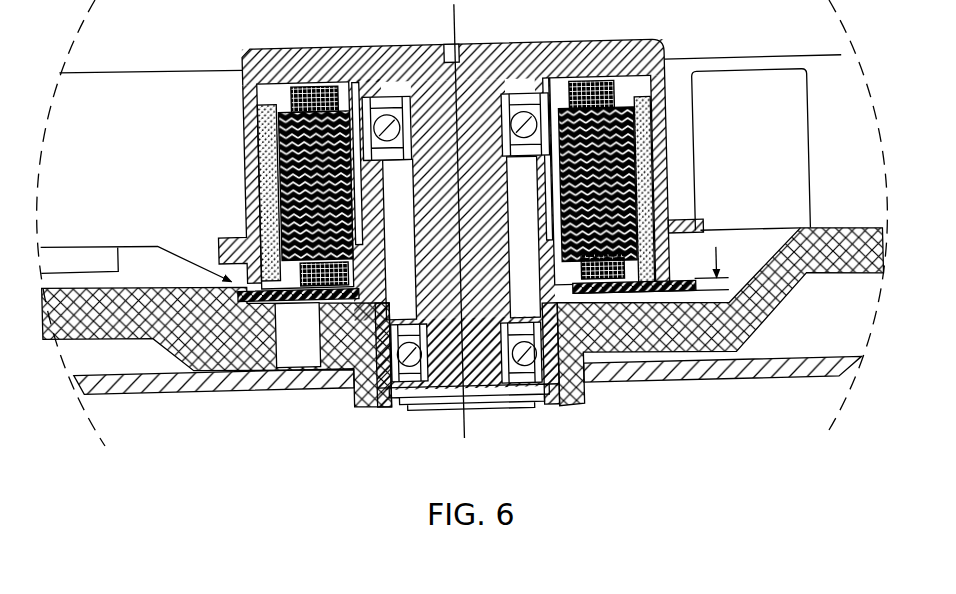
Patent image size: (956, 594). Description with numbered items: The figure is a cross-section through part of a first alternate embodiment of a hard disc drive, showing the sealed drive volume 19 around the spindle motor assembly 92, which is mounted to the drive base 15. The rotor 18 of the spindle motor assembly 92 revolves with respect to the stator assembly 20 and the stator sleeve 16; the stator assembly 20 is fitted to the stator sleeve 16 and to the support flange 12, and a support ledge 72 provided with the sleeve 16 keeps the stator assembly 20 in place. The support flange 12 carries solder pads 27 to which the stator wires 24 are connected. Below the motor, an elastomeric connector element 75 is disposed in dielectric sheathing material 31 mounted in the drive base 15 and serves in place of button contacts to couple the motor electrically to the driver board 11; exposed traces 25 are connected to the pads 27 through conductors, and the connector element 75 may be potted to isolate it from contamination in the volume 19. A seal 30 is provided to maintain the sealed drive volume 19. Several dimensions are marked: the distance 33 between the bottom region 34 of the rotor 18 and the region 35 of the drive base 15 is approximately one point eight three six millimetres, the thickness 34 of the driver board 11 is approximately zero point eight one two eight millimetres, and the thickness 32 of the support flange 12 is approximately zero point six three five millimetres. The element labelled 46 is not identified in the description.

The driver board 11 is at (193, 377).
The support flange 12 is at (715, 246).
The drive base 15 is at (838, 235).
The stator sleeve 16 is at (373, 225).
The rotor 18 is at (244, 152).
The drive volume 19 is at (141, 170).
The stator assembly 20 is at (318, 86).
The stator wires 24 is at (672, 218).
The exposed traces 25 is at (235, 234).
The solder pads 27 is at (650, 301).
The seal 30 is at (248, 313).
The dielectric sheathing material 31 is at (267, 375).
The thickness of support flange 32 is at (718, 296).
The distance 33 is at (240, 312).
The bottom region of rotor / thickness of driver PCB 34 is at (226, 249).
The region of drive base 35 is at (187, 299).
The flange 46 is at (700, 233).
The support ledge 72 is at (373, 268).
The elastomeric connector element 75 is at (297, 335).
The spindle motor assembly 92 is at (661, 47).